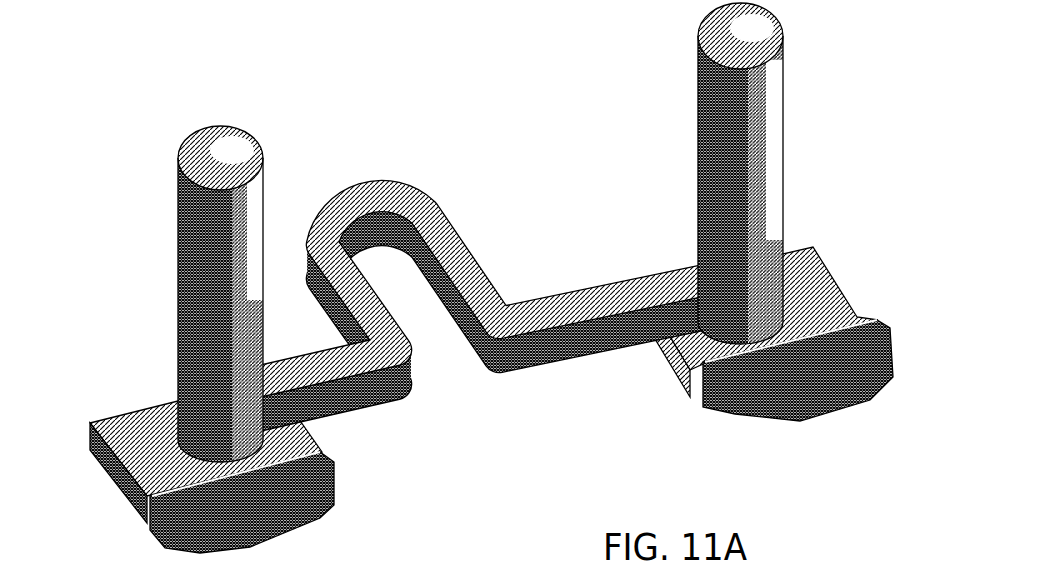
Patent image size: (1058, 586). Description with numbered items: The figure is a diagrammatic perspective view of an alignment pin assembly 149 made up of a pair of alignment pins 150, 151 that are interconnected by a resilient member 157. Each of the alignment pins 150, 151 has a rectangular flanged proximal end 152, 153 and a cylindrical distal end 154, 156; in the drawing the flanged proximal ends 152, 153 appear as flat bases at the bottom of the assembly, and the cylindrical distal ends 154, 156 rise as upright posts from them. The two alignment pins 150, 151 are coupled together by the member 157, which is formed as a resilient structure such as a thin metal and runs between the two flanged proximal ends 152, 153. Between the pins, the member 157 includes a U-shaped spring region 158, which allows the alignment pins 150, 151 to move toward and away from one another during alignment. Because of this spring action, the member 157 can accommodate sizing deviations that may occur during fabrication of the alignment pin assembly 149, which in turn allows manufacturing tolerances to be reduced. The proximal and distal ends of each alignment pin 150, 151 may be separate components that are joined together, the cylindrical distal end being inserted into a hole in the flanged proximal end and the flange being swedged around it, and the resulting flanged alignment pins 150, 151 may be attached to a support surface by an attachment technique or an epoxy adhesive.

The alignment pin assembly 149 is at (128, 45).
The alignment pin 150 is at (158, 268).
The alignment pin 151 is at (802, 147).
The rectangular flanged proximal end 152 is at (113, 415).
The rectangular flanged proximal end 153 is at (813, 270).
The cylindrical distal end 154 is at (186, 200).
The cylindrical distal end 156 is at (770, 62).
The member 157 is at (547, 300).
The U-shaped spring region 158 is at (373, 183).